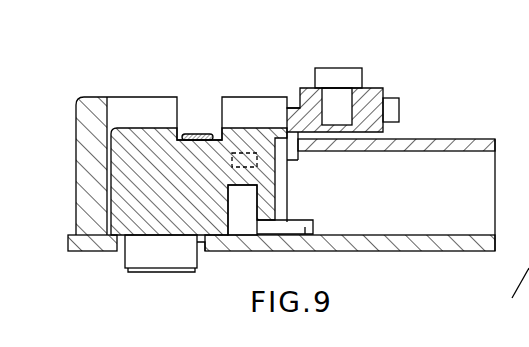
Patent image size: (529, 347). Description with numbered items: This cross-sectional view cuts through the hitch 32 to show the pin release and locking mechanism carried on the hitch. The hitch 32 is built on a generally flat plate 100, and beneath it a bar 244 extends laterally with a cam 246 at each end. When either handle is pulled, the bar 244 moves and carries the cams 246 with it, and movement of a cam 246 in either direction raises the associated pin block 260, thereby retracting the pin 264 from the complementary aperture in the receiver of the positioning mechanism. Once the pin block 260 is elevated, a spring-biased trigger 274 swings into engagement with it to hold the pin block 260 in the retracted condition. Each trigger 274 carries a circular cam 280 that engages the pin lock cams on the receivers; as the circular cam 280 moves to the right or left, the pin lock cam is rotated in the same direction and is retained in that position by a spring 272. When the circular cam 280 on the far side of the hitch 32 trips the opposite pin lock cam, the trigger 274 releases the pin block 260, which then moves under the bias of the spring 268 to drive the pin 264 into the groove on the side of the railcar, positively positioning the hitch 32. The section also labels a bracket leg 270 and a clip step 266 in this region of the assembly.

The hitch 32 is at (146, 47).
The pin block 260 is at (129, 126).
The spring 268 is at (197, 132).
The bracket leg 270 is at (283, 141).
The cam 246 is at (257, 203).
The bar 244 is at (308, 232).
The spring 272 is at (291, 107).
The circular cam 280 is at (362, 70).
The trigger 274 is at (386, 108).
The generally flat plate 100 is at (68, 241).
The pin 264 is at (125, 262).
The clip step 266 is at (205, 240).